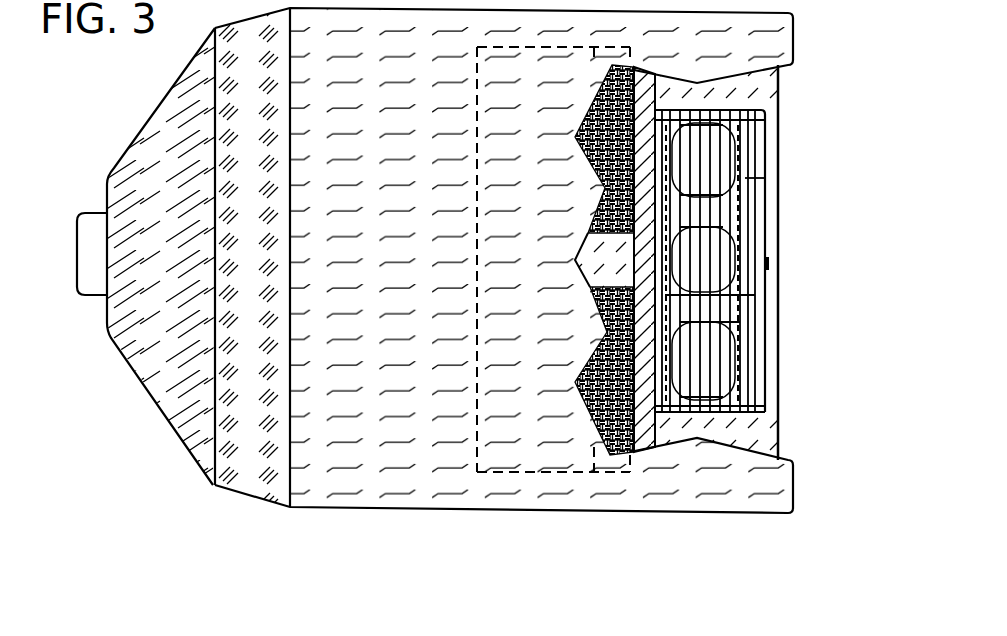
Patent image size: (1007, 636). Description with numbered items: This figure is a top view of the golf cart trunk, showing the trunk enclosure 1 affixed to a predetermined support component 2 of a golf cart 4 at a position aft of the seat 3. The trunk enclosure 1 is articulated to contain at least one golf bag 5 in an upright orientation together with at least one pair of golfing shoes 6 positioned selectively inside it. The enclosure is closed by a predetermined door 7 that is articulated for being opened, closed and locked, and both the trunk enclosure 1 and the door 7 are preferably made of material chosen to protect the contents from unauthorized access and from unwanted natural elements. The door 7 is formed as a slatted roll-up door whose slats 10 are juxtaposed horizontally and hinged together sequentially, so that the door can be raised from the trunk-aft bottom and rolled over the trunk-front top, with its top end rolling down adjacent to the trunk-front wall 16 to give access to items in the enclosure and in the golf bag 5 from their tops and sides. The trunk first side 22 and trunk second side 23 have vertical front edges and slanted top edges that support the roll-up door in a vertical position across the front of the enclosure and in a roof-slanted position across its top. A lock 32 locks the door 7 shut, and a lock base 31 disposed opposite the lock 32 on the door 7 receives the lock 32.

The trunk enclosure 1 is at (707, 430).
The support component 2 is at (645, 425).
The seat 3 is at (600, 400).
The golf cart 4 is at (113, 469).
The golf bag 5 is at (737, 160).
The pair of golfing shoes 6 is at (753, 178).
The door 7 is at (763, 295).
The slats 10 is at (705, 210).
The trunk-front wall 16 is at (725, 316).
The trunk first side 22 is at (730, 408).
The trunk second side 23 is at (763, 112).
The lock base 31 is at (777, 236).
The lock 32 is at (769, 263).